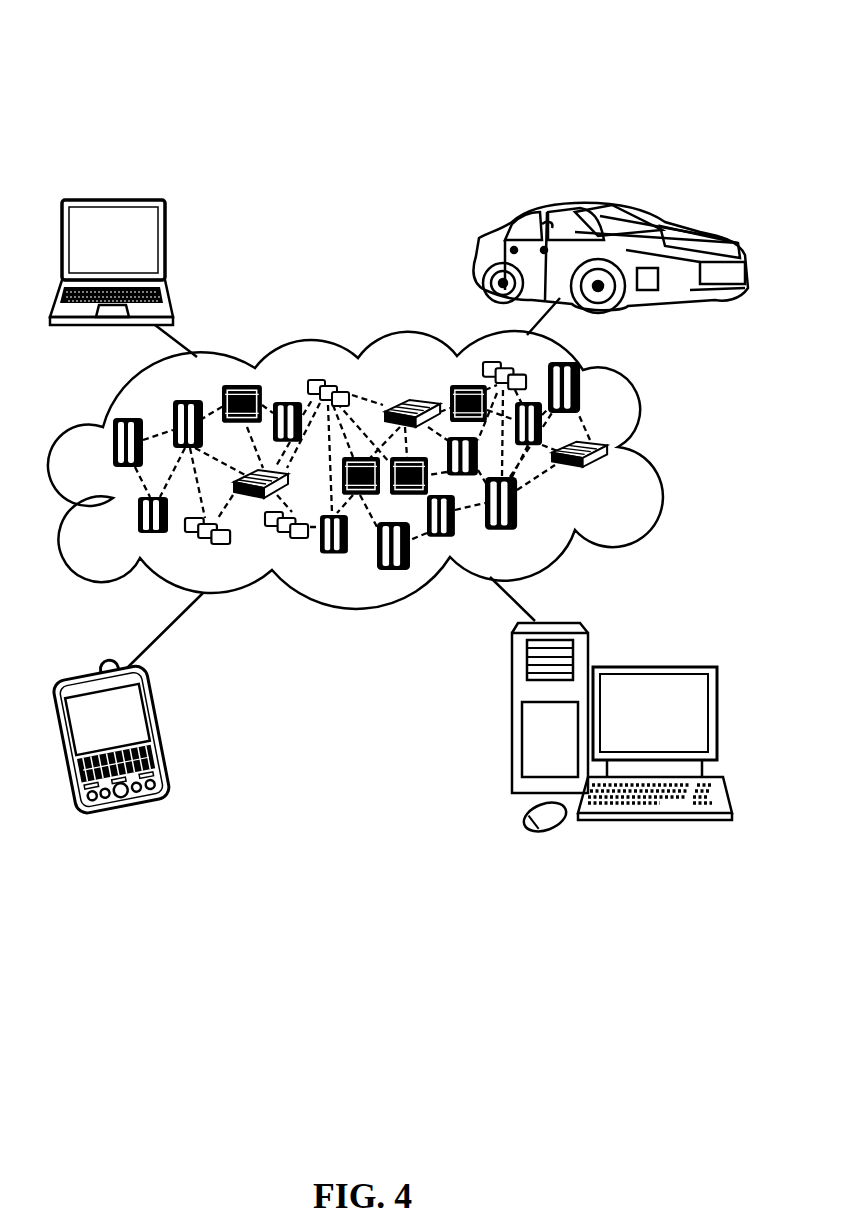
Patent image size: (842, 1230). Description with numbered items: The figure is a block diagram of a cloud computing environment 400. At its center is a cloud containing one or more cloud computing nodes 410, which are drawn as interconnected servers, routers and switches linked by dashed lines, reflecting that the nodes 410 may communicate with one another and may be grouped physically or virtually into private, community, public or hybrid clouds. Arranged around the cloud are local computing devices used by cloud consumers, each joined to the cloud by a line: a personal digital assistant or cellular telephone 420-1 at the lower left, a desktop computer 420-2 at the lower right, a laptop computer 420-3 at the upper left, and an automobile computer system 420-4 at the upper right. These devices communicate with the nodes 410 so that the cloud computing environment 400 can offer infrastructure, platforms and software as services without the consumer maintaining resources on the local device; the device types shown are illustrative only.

The cloud computing environment 400 is at (292, 54).
The cloud computing nodes 410 is at (618, 475).
The personal digital assistant (PDA) or cellular telephone 420-1 is at (160, 733).
The desktop computer 420-2 is at (653, 665).
The laptop computer 420-3 is at (165, 249).
The automobile computer system 420-4 is at (492, 262).